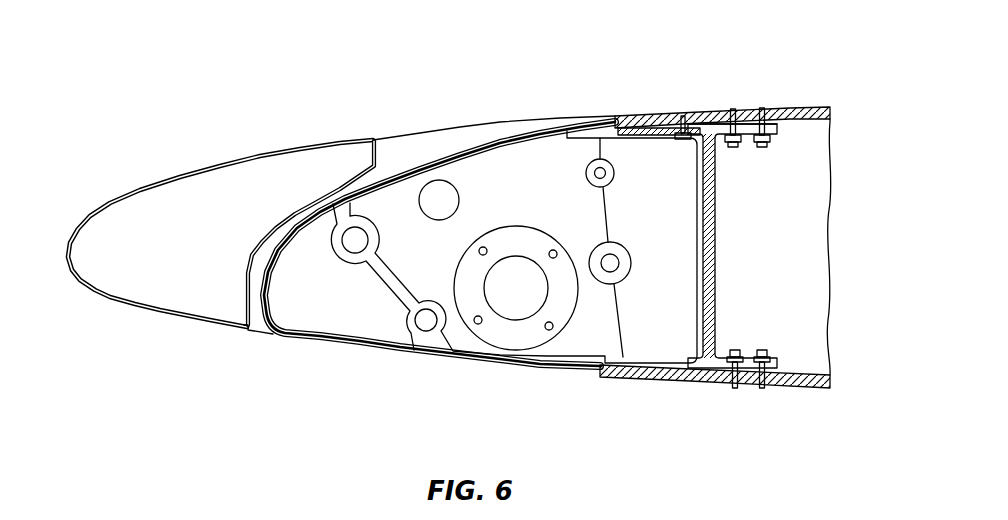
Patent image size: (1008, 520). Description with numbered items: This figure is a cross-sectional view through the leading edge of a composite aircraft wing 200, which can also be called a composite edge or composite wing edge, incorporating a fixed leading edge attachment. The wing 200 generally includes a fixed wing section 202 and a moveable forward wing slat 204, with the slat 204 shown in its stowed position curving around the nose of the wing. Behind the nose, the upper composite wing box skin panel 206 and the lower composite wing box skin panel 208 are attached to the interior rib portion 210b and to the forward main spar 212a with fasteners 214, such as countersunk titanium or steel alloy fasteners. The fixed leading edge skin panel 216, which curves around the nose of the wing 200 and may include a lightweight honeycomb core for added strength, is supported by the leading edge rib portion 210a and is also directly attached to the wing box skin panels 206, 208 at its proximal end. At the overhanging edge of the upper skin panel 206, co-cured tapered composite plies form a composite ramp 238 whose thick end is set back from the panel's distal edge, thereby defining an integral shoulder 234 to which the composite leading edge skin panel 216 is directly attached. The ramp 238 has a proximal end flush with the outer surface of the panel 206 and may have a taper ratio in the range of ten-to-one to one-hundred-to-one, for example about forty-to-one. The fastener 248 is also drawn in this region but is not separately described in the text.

The wing 200 is at (387, 87).
The fixed wing section 202 is at (827, 433).
The moveable forward wing slat 204 is at (177, 175).
The upper composite wing box skin panel 206 is at (807, 108).
The lower composite wing box skin panel 208 is at (800, 390).
The leading edge rib portion 210a is at (514, 247).
The interior rib portion 210b is at (793, 247).
The forward main spar 212a is at (715, 233).
The fasteners 214 is at (733, 120).
The fixed leading edge skin panel 216 is at (483, 145).
The integral shoulder 234 is at (642, 118).
The composite ramp 238 is at (708, 118).
The fastener 248 is at (682, 118).